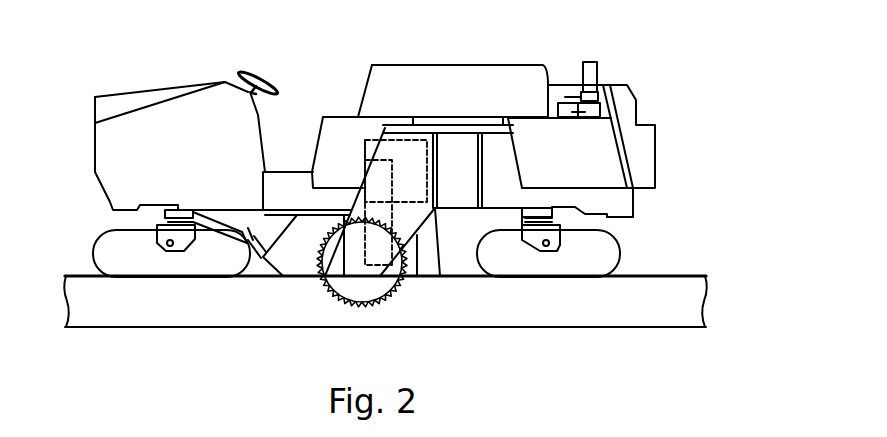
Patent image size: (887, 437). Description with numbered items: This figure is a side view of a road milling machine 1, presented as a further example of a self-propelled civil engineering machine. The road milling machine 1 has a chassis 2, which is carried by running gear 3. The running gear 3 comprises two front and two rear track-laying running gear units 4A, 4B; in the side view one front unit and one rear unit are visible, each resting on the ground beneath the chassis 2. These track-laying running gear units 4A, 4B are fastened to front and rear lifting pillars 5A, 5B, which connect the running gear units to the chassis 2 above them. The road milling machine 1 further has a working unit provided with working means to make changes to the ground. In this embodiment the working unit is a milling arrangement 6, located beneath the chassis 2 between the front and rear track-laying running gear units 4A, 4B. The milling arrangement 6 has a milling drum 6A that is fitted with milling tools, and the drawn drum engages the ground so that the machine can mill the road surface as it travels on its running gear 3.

The road milling machine 1 is at (688, 62).
The chassis 2 is at (538, 132).
The running gear 3 is at (366, 213).
The front track-laying running gear units 4A is at (98, 256).
The rear track-laying running gear units 4B is at (617, 255).
The front lifting pillars 5A is at (172, 212).
The rear lifting pillars 5B is at (538, 214).
The milling arrangement 6 is at (375, 295).
The milling drum 6A is at (400, 296).